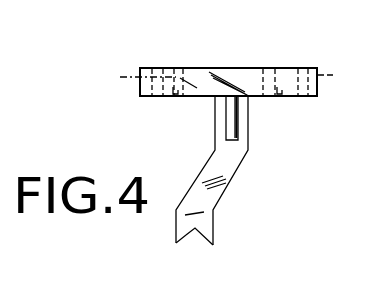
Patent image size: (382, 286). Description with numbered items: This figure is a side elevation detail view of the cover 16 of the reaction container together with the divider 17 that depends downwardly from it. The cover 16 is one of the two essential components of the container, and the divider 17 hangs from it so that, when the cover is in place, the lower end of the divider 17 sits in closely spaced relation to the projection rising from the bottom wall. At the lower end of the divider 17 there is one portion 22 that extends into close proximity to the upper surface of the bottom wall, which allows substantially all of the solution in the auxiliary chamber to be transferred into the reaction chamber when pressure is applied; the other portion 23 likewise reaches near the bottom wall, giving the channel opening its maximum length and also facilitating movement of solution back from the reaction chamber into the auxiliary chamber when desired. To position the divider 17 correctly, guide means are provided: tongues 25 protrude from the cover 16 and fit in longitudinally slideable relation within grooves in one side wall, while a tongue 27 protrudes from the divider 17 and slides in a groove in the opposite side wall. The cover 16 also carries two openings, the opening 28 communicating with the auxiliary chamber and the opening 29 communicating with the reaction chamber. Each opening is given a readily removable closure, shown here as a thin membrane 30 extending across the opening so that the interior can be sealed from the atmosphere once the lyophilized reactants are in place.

The cover 16 is at (251, 36).
The divider 17 is at (219, 149).
The portion 22 is at (180, 242).
The portion 23 is at (213, 241).
The tongues 25 is at (225, 74).
The tongue 27 is at (240, 132).
The opening 28 is at (180, 96).
The opening 29 is at (280, 90).
The thin membrane 30 is at (173, 67).